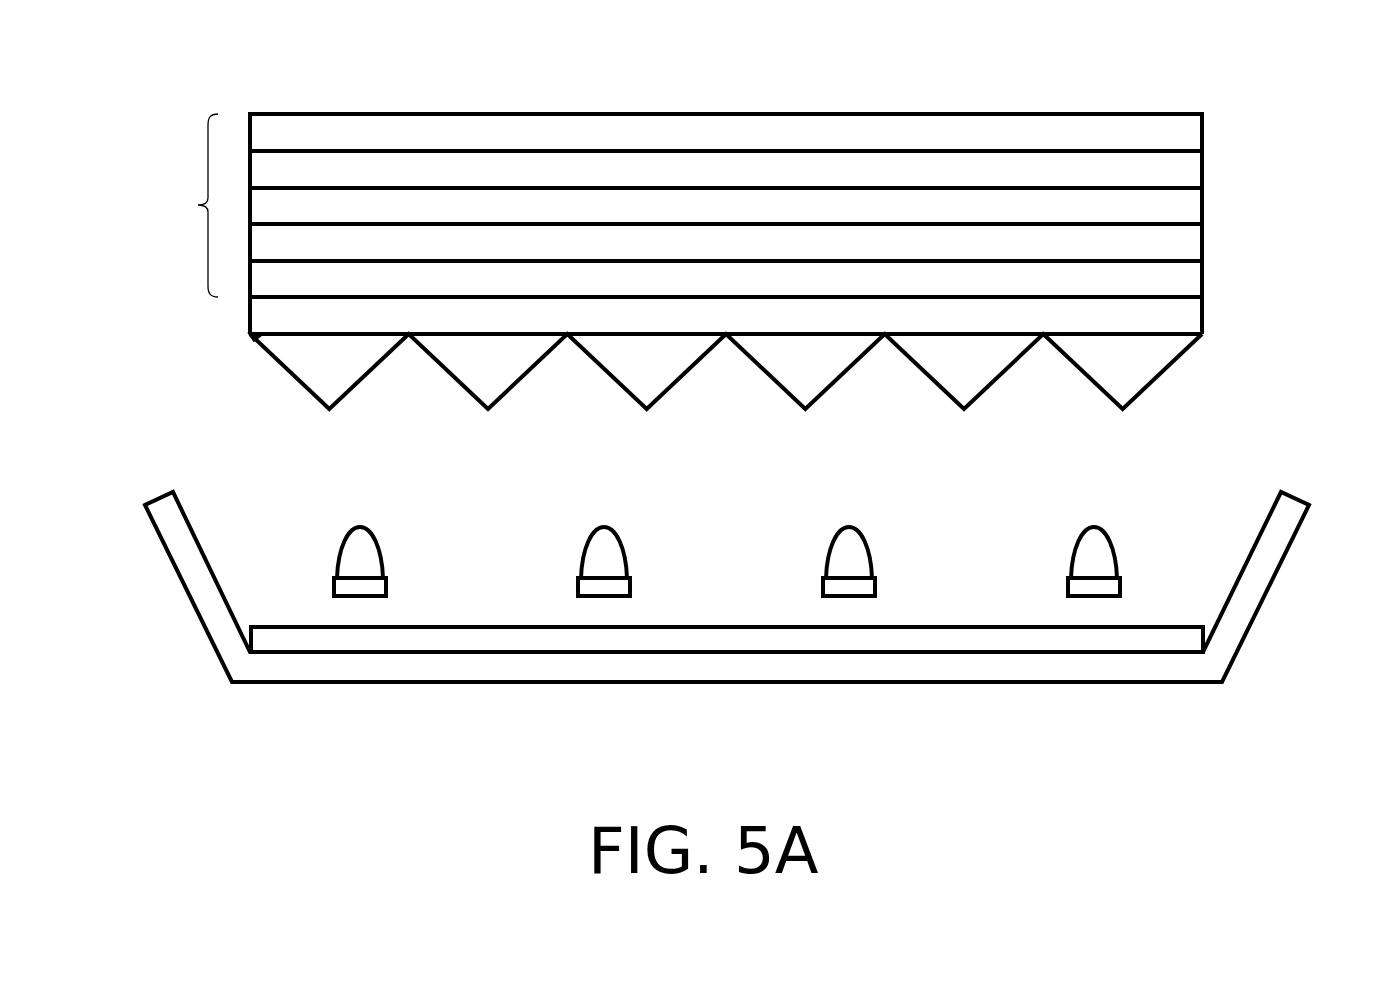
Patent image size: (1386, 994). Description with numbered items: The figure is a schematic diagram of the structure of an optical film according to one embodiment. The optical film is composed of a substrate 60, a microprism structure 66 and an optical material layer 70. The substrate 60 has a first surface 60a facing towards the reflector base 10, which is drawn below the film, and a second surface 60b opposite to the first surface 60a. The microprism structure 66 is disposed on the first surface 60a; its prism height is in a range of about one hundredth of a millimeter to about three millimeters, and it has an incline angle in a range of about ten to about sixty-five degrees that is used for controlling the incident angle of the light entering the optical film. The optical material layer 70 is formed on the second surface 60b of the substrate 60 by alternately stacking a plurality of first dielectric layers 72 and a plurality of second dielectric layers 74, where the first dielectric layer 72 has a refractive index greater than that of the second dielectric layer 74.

The reflector base 10 is at (1248, 597).
The substrate 60 is at (707, 236).
The first surface 60a is at (266, 346).
The second surface 60b is at (285, 297).
The microprism structure 66 is at (1150, 383).
The optical material layer 70 is at (185, 205).
The first dielectric layer 72 is at (1190, 131).
The second dielectric layer 74 is at (1187, 168).